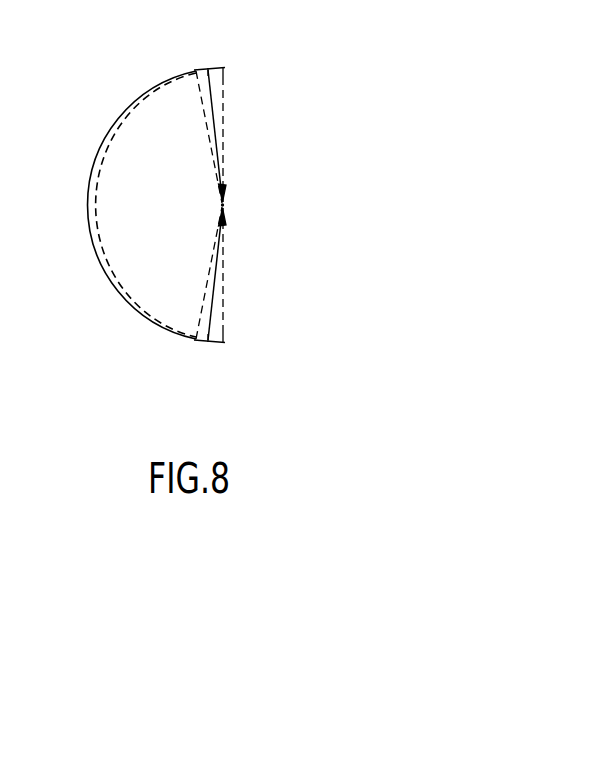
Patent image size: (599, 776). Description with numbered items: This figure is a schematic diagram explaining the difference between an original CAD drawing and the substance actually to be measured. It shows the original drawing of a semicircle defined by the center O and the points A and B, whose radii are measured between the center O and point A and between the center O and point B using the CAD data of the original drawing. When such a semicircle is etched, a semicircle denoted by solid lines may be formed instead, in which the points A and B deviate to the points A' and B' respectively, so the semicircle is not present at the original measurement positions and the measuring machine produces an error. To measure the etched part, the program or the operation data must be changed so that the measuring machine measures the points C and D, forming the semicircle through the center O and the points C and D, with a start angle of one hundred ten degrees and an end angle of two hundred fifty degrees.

The point A is at (231, 132).
The point A' is at (214, 119).
The point B is at (232, 280).
The point B' is at (214, 290).
The point C is at (200, 124).
The point D is at (199, 284).
The center O is at (231, 205).